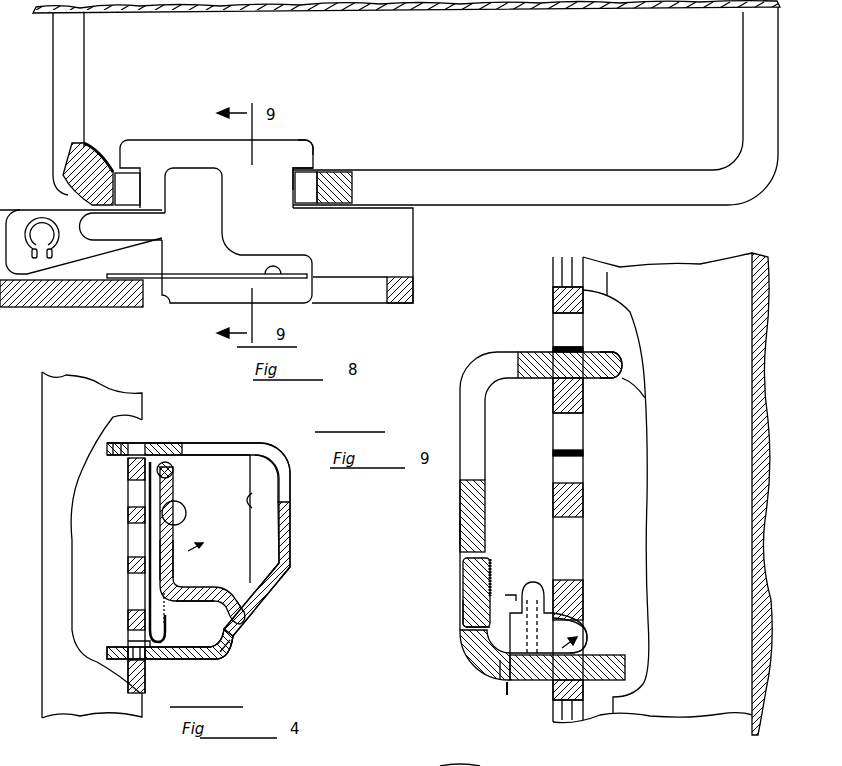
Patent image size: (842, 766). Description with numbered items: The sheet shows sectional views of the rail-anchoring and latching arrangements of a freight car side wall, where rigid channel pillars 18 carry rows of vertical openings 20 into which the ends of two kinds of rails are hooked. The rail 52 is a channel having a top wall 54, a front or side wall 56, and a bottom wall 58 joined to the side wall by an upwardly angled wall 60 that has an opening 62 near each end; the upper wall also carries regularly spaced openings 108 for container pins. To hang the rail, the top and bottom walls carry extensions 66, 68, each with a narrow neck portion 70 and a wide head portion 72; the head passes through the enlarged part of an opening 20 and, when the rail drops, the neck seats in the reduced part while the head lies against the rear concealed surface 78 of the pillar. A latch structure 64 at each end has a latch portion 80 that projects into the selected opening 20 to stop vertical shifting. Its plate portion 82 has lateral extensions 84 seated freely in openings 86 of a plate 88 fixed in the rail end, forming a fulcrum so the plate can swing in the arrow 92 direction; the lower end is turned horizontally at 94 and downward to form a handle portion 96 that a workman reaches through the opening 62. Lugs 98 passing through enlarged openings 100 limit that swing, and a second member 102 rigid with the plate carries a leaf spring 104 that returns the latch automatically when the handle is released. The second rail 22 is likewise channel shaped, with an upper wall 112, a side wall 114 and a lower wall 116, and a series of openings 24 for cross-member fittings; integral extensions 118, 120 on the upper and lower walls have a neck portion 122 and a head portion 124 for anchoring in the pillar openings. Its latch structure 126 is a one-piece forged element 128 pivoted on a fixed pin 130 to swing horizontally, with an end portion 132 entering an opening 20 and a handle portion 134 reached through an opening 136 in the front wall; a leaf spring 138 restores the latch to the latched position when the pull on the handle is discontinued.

In FIG. 8, the pillar 18 is at (500, 176).
In FIG. 9, the pillar 18 is at (472, 765).
In FIG. 4, the opening 20 is at (128, 494).
In FIG. 9, the opening 20 is at (581, 534).
In FIG. 9, the rail 22 is at (470, 512).
In FIG. 9, the opening 24 is at (460, 406).
In FIG. 4, the rail 52 is at (298, 527).
In FIG. 4, the top wall 54 is at (168, 443).
In FIG. 4, the side wall 56 is at (292, 538).
In FIG. 4, the bottom wall 58 is at (168, 660).
In FIG. 4, the upwardly angled wall 60 is at (232, 637).
In FIG. 4, the opening 62 is at (276, 592).
In FIG. 4, the latch structure 64 is at (148, 585).
In FIG. 4, the extension 66 is at (142, 428).
In FIG. 4, the extension 68 is at (128, 646).
In FIG. 4, the neck portion 70 is at (128, 462).
In FIG. 4, the head portion 72 is at (108, 447).
In FIG. 4, the rear concealed surface 78 is at (142, 416).
In FIG. 4, the latch portion 80 is at (131, 636).
In FIG. 4, the plate portion 82 is at (176, 492).
In FIG. 4, the extension 84 is at (181, 470).
In FIG. 4, the opening 86 is at (176, 470).
In FIG. 4, the plate 88 is at (260, 519).
In FIG. 4, the arrow 92 is at (180, 548).
In FIG. 4, the horizontal turned portion 94 is at (192, 590).
In FIG. 4, the handle portion 96 is at (229, 628).
In FIG. 4, the lug 98 is at (185, 534).
In FIG. 4, the enlarged opening 100 is at (187, 515).
In FIG. 4, the second member 102 is at (160, 556).
In FIG. 4, the leaf spring 104 is at (168, 612).
In FIG. 4, the opening 108 is at (248, 443).
In FIG. 9, the upper wall 112 is at (546, 357).
In FIG. 9, the side wall 114 is at (458, 531).
In FIG. 9, the lower wall 116 is at (500, 680).
In FIG. 9, the extension 118 is at (604, 381).
In FIG. 9, the extension 120 is at (623, 668).
In FIG. 8, the neck portion 122 is at (286, 190).
In FIG. 8, the head portion 124 is at (292, 147).
In FIG. 8, the latch structure 126 is at (157, 305).
In FIG. 9, the latch structure 126 is at (580, 641).
In FIG. 9, the forged element 128 is at (497, 667).
In FIG. 8, the pin 130 is at (42, 230).
In FIG. 9, the pin 130 is at (510, 682).
In FIG. 8, the end portion 132 is at (183, 178).
In FIG. 9, the end portion 132 is at (560, 628).
In FIG. 9, the handle portion 134 is at (467, 604).
In FIG. 8, the opening 136 is at (377, 306).
In FIG. 9, the opening 136 is at (463, 566).
In FIG. 8, the leaf spring 138 is at (242, 272).